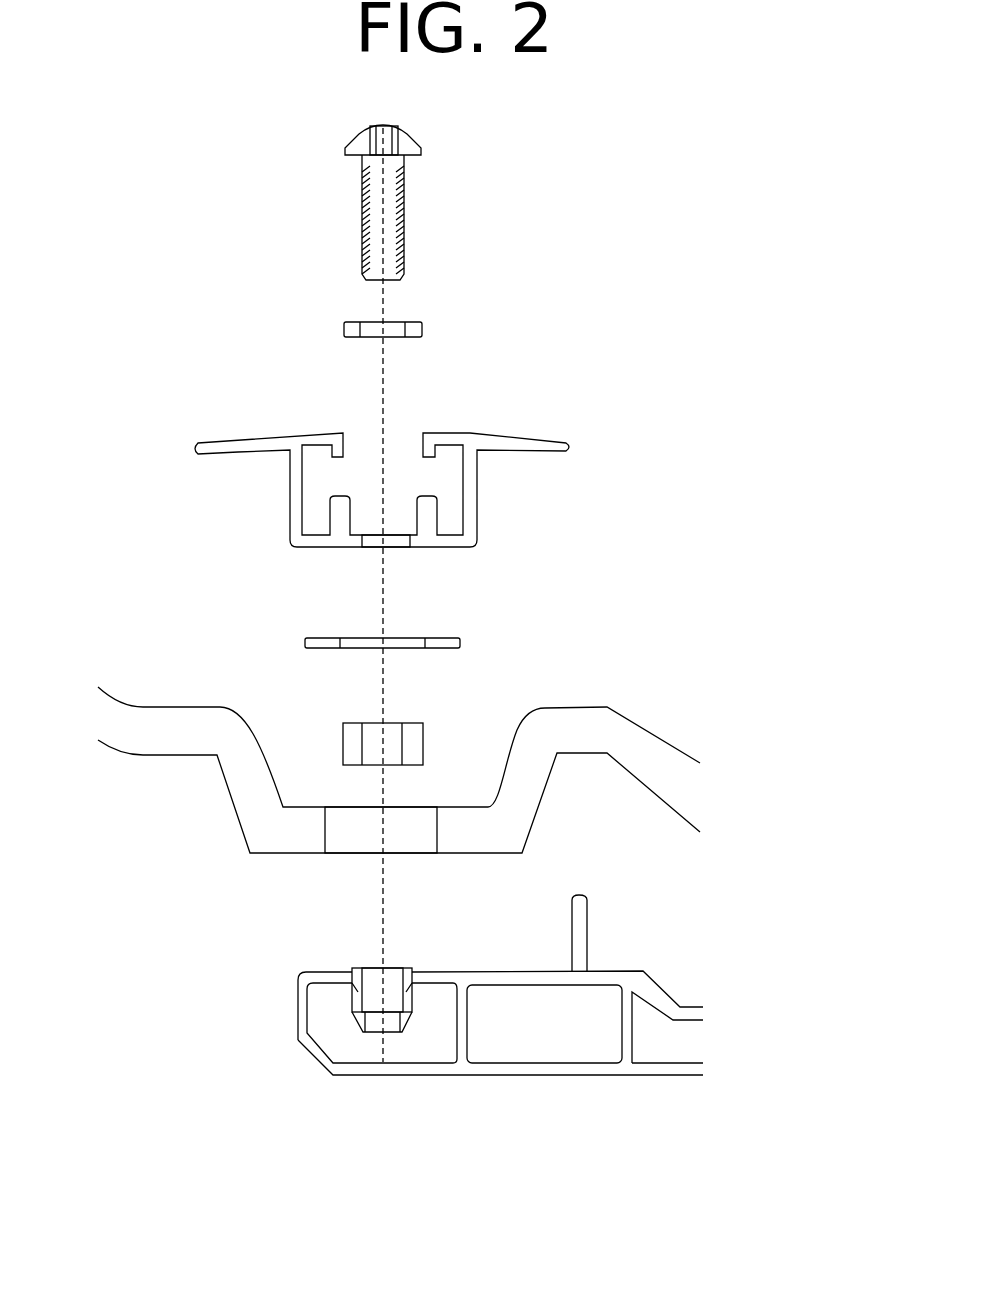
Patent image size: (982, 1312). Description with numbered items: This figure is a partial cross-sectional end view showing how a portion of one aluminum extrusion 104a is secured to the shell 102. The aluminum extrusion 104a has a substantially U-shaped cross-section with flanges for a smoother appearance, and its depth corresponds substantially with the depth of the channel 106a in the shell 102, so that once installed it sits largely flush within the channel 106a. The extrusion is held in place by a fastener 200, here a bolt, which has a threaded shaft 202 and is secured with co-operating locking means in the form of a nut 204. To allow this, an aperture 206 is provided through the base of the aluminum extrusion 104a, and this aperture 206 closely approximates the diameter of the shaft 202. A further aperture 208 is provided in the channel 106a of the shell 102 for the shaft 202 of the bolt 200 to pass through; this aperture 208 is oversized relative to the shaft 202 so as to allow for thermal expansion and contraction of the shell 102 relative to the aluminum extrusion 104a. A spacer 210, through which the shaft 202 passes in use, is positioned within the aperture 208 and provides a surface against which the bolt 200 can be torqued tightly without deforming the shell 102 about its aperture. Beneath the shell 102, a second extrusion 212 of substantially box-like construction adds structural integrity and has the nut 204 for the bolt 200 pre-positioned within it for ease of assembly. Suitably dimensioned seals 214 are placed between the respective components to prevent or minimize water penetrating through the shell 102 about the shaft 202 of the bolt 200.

The fastener 200 is at (410, 157).
The threaded shaft 202 is at (403, 236).
The seals 214 is at (345, 330).
The aluminum extrusion 104a is at (480, 437).
The aperture 206 is at (393, 548).
The spacer 210 is at (352, 748).
The shell 102 is at (680, 760).
The channel 106a is at (483, 730).
The aperture 208 is at (405, 830).
The second extrusion 212 is at (331, 1076).
The nut 204 is at (355, 990).